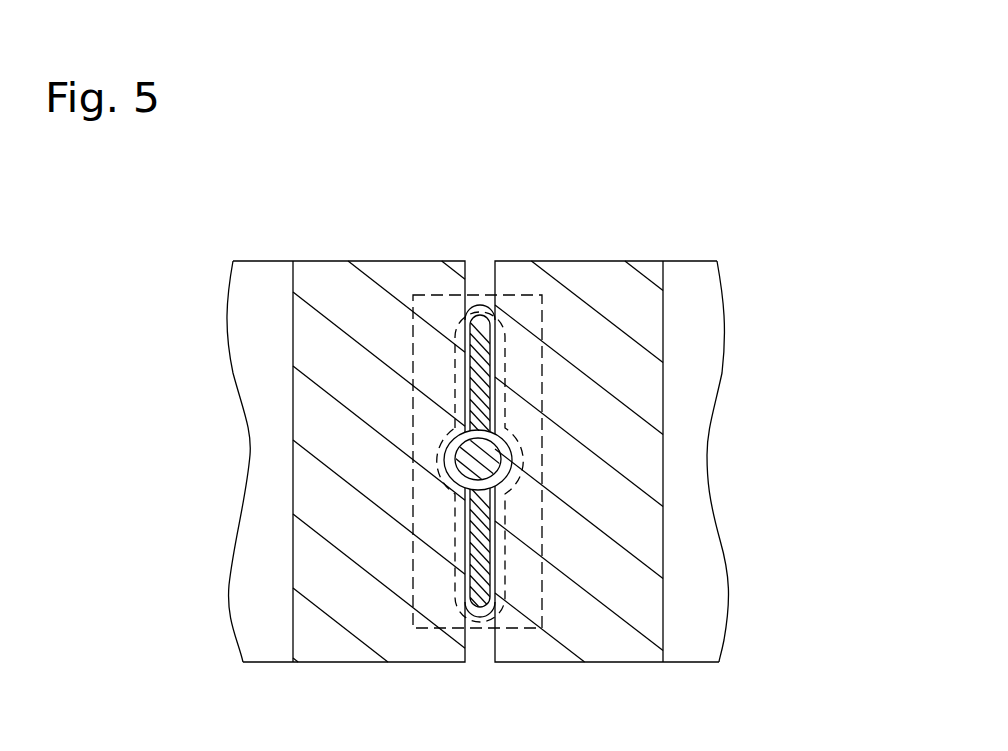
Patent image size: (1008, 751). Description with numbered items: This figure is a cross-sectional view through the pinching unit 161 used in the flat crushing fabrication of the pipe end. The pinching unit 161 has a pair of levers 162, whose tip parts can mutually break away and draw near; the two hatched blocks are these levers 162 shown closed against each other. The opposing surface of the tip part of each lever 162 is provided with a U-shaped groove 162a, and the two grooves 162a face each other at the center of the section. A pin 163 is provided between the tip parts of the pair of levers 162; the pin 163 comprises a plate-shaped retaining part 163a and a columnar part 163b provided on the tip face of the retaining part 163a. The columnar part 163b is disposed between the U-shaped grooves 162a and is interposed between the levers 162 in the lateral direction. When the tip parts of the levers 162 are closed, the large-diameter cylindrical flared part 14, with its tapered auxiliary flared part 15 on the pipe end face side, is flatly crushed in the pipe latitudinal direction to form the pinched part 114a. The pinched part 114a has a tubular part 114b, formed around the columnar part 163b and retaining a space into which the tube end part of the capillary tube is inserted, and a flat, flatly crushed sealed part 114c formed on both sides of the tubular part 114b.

The flared part 14 is at (526, 470).
The auxiliary flared part 15 is at (503, 352).
The pinched part 114a is at (526, 455).
The tubular part 114b is at (490, 438).
The sealed part 114c is at (470, 349).
The pinching unit 161 is at (792, 262).
The lever 162 is at (287, 670).
The U-shaped groove 162a is at (462, 492).
The pin 163 is at (478, 279).
The retaining part 163a is at (542, 295).
The columnar part 163b is at (440, 462).